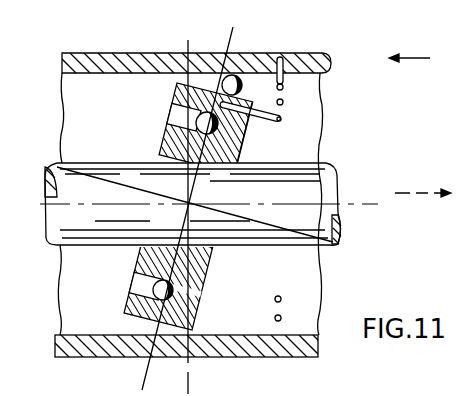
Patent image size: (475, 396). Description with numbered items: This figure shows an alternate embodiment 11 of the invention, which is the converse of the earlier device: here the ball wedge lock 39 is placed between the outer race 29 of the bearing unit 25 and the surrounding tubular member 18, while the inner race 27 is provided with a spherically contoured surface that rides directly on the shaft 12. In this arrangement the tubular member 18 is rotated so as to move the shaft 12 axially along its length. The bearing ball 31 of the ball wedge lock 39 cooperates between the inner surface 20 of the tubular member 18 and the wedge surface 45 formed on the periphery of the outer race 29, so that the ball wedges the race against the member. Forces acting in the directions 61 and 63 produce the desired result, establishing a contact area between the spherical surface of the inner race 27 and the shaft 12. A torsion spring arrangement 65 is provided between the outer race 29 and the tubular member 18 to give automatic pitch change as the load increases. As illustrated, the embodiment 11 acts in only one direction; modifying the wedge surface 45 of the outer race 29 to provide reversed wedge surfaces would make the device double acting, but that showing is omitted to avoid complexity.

The embodiment 11 is at (99, 284).
The shaft 12 is at (325, 192).
The tubular member 18 is at (108, 55).
The inner surface 20 is at (311, 100).
The bearing unit 25 is at (201, 105).
The inner race 27 is at (243, 153).
The outer race 29 is at (177, 97).
The bearing ball 31 is at (251, 90).
The ball wedge lock 39 is at (292, 84).
The wedge surface 45 is at (215, 73).
The direction 61 is at (412, 196).
The direction 63 is at (428, 58).
The torsion spring arrangement 65 is at (325, 65).